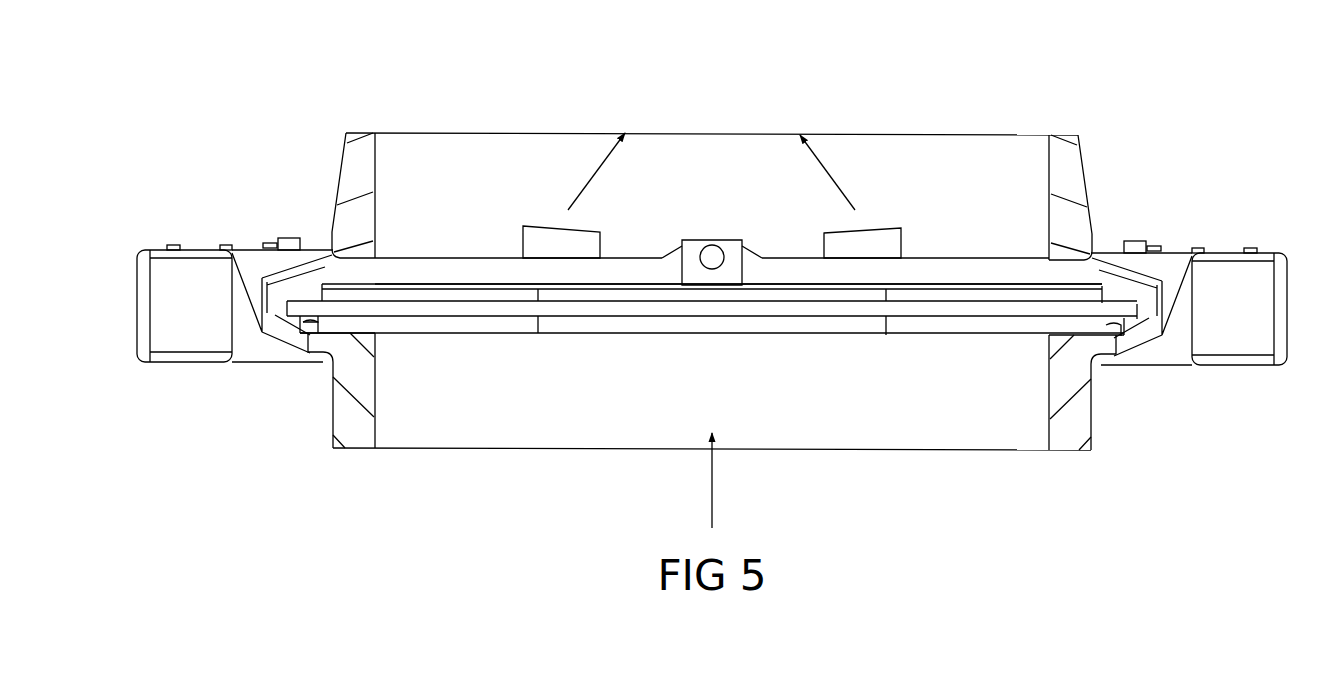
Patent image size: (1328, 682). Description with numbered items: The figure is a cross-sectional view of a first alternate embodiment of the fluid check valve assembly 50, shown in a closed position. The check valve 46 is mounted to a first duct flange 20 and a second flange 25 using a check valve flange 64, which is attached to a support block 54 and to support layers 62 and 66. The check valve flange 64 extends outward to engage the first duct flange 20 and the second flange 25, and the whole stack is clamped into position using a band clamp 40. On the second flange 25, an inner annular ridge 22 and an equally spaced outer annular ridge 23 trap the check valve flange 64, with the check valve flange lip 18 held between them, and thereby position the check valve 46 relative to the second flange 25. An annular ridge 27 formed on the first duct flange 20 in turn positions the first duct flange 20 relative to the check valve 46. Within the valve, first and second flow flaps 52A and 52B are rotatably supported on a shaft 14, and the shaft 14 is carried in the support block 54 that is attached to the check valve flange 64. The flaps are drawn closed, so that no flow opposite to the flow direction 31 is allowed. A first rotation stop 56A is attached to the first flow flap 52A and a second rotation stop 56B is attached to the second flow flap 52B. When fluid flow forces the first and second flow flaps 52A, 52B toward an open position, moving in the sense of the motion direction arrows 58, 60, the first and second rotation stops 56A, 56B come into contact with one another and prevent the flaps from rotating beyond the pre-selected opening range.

The fluid check valve assembly 50 is at (727, 271).
The first duct flange 20 is at (725, 288).
The second flange 25 is at (1080, 405).
The check valve 46 is at (481, 240).
The first flow flap 52A is at (398, 267).
The second flow flap 52B is at (972, 270).
The first rotation stop 56A is at (544, 234).
The second rotation stop 56B is at (880, 238).
The motion direction arrow 58 is at (592, 163).
The motion direction arrow 60 is at (838, 160).
The support block 54 is at (704, 188).
The shaft 14 is at (713, 255).
The support layer 62 is at (775, 293).
The check valve flange 64 is at (942, 312).
The support layer 66 is at (870, 330).
The outer annular ridge 23 is at (277, 318).
The inner annular ridge 22 is at (315, 320).
The band clamp 40 is at (1255, 280).
The annular ridge 27 is at (1150, 250).
The check valve flange lip 18 is at (1128, 323).
The flow direction 31 is at (712, 490).